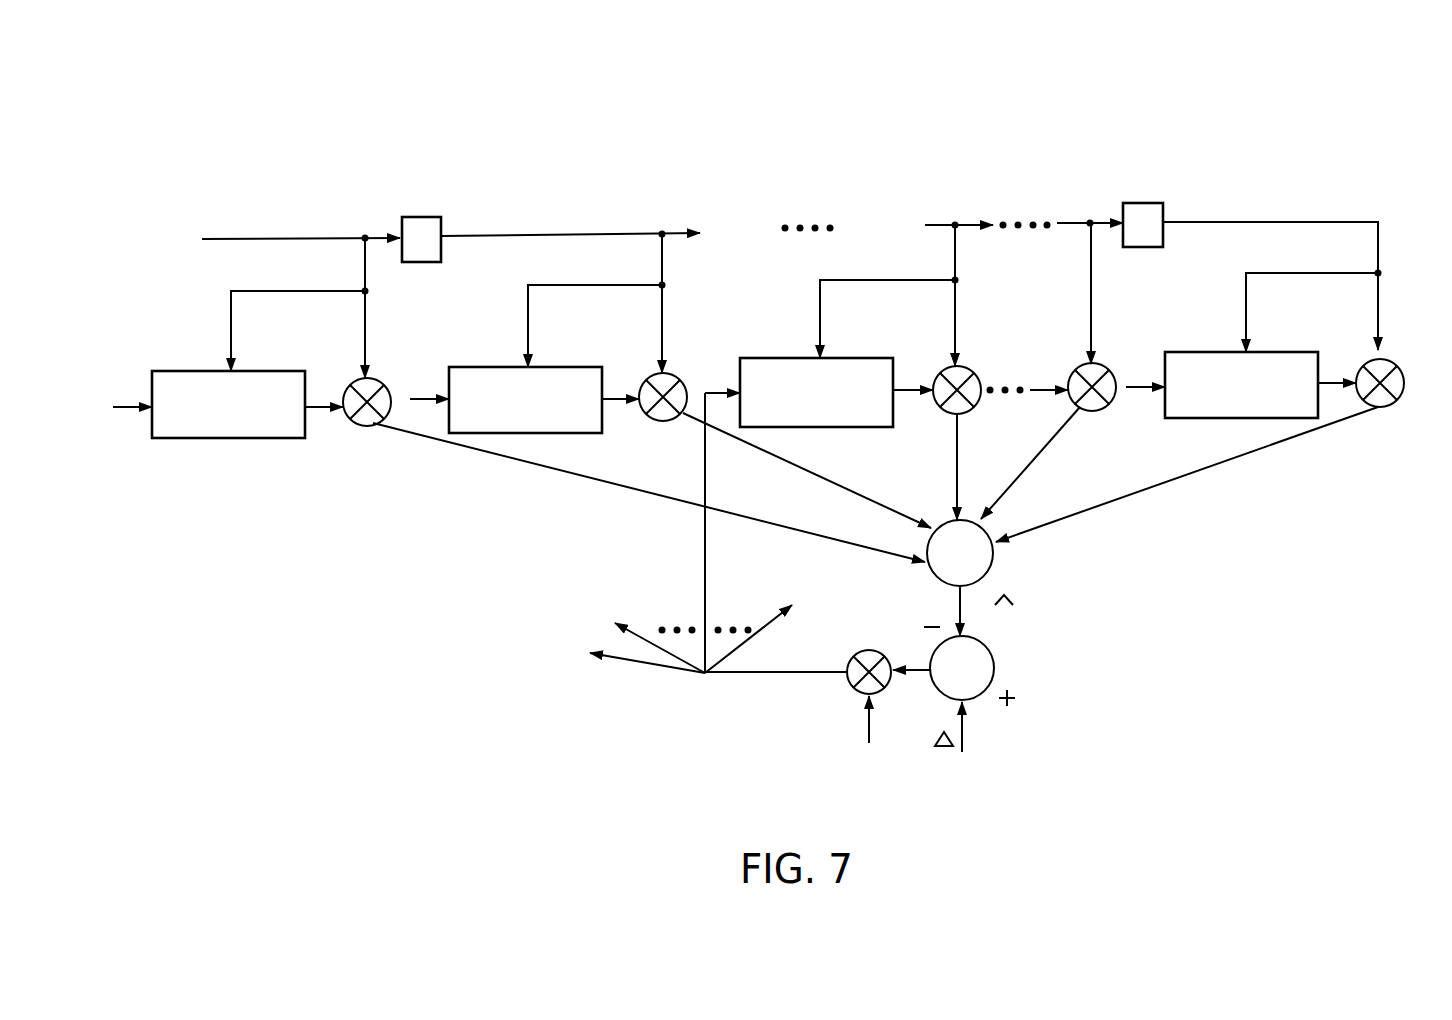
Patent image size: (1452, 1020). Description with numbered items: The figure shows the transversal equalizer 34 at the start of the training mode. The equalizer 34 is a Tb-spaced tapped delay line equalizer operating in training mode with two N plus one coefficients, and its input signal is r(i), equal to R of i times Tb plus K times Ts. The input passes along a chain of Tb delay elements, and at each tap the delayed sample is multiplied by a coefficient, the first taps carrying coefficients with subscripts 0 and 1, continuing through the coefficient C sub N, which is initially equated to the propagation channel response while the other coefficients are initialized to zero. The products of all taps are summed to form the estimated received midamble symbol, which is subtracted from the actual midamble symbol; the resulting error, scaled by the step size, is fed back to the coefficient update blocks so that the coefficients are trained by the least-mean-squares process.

The transversal equalizer 34 is at (1242, 106).
The tap multiplier for coefficient C0 0 is at (620, 458).
The tap multiplier for coefficient C1 1 is at (771, 438).